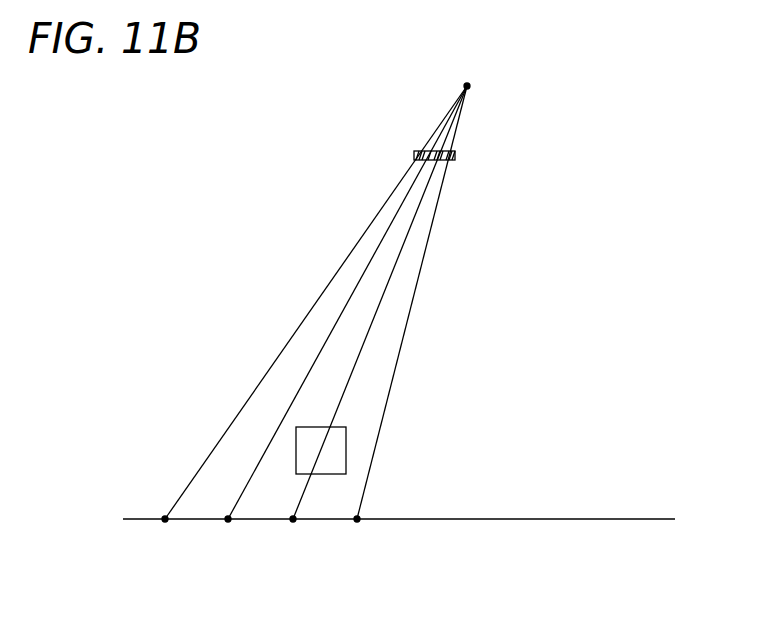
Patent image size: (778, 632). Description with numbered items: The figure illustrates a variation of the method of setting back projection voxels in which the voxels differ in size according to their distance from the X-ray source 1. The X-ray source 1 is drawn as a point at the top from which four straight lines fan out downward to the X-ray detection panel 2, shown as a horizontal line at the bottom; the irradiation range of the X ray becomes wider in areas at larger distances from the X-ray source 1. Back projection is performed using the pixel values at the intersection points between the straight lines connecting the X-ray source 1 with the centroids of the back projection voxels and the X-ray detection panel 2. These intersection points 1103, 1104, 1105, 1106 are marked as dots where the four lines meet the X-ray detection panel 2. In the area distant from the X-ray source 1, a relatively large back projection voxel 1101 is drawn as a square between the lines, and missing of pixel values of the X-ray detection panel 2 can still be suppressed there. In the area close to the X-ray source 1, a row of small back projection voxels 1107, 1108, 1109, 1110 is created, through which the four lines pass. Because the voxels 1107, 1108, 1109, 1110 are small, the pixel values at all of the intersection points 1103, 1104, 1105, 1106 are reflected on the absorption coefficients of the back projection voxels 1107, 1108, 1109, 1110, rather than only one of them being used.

The X-ray source 1 is at (467, 83).
The X-ray detection panel 2 is at (547, 518).
The back projection voxel 1101 is at (346, 450).
The intersection point 1103 is at (292, 522).
The intersection point 1104 is at (163, 522).
The intersection point 1105 is at (226, 522).
The intersection point 1106 is at (358, 522).
The small back projection voxel 1107 is at (414, 153).
The small back projection voxel 1108 is at (426, 150).
The small back projection voxel 1109 is at (441, 162).
The small back projection voxel 1110 is at (456, 154).